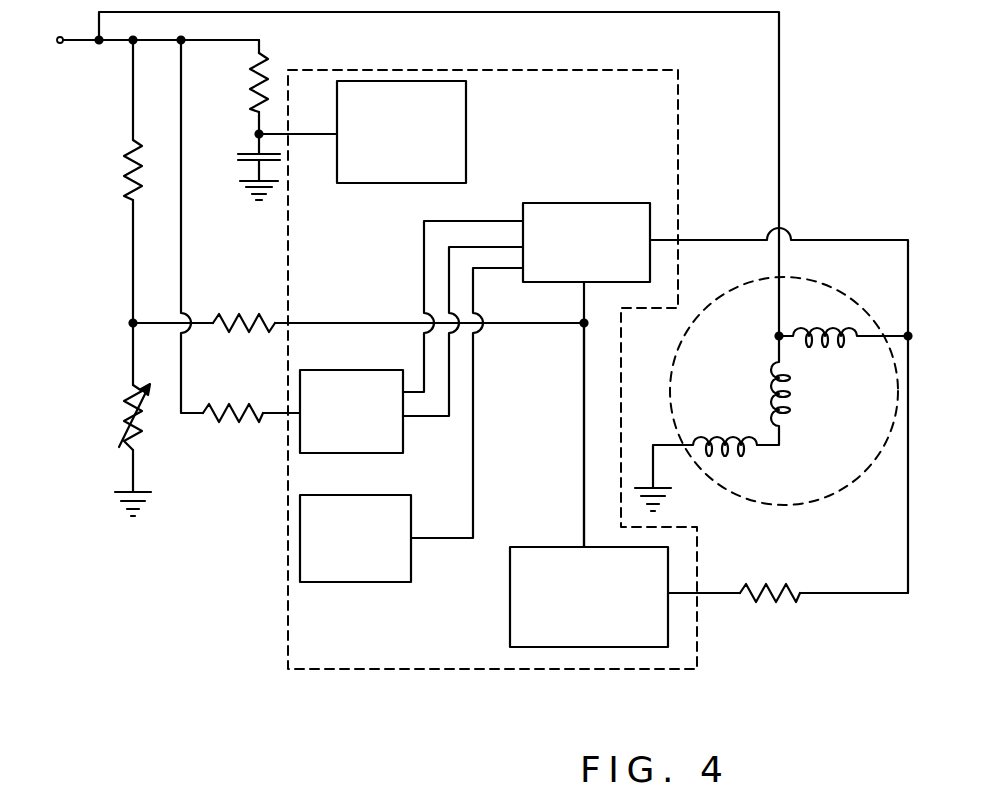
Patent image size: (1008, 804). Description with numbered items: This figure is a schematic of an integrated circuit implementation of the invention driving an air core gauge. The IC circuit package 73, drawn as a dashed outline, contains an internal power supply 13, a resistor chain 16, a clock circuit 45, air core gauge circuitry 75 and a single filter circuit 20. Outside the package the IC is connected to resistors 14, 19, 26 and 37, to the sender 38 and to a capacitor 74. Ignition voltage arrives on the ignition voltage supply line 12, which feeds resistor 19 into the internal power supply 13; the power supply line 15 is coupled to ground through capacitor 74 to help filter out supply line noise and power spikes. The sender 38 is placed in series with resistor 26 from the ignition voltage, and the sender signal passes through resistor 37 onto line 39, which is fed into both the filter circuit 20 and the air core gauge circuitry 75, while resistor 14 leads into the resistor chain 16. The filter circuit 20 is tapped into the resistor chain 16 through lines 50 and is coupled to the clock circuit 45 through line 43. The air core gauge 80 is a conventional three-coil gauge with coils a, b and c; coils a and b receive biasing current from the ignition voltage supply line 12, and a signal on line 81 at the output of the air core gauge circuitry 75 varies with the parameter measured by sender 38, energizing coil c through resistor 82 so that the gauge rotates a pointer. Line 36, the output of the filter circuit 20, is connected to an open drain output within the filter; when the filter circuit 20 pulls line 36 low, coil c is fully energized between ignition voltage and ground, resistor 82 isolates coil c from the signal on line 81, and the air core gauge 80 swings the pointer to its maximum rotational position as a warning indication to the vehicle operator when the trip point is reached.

The ignition voltage supply line 12 is at (87, 43).
The internal power supply 13 is at (383, 81).
The resistor 14 is at (250, 418).
The power supply line 15 is at (305, 135).
The resistor chain 16 is at (315, 453).
The resistor 19 is at (268, 72).
The filter circuit 20 is at (618, 203).
The resistor 26 is at (127, 170).
The line 36 is at (757, 240).
The resistor 37 is at (258, 316).
The sender 38 is at (128, 428).
The line 39 is at (396, 322).
The line 43 is at (425, 538).
The clock circuit 45 is at (370, 582).
The lines 50 is at (420, 425).
The IC circuit package 73 is at (553, 669).
The capacitor 74 is at (250, 152).
The air core gauge circuitry 75 is at (575, 547).
The air core gauge 80 is at (800, 506).
The line 81 is at (715, 593).
The resistor 82 is at (787, 583).